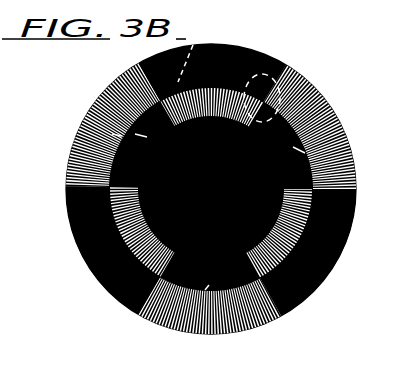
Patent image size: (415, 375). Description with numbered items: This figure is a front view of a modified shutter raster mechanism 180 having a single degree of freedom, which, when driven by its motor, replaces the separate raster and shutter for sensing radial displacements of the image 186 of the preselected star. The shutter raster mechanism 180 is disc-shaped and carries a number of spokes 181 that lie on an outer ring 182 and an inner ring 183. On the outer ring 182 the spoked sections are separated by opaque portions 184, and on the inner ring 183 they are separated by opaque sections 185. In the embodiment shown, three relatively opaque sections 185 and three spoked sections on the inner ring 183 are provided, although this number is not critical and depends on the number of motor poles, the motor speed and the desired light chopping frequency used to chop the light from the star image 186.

The shutter raster mechanism 180 is at (355, 164).
The spokes 181 is at (325, 105).
The outer ring 182 is at (286, 68).
The inner ring 183 is at (193, 45).
The opaque portions 184 is at (264, 57).
The opaque sections 185 is at (81, 130).
The star image 186 is at (305, 83).